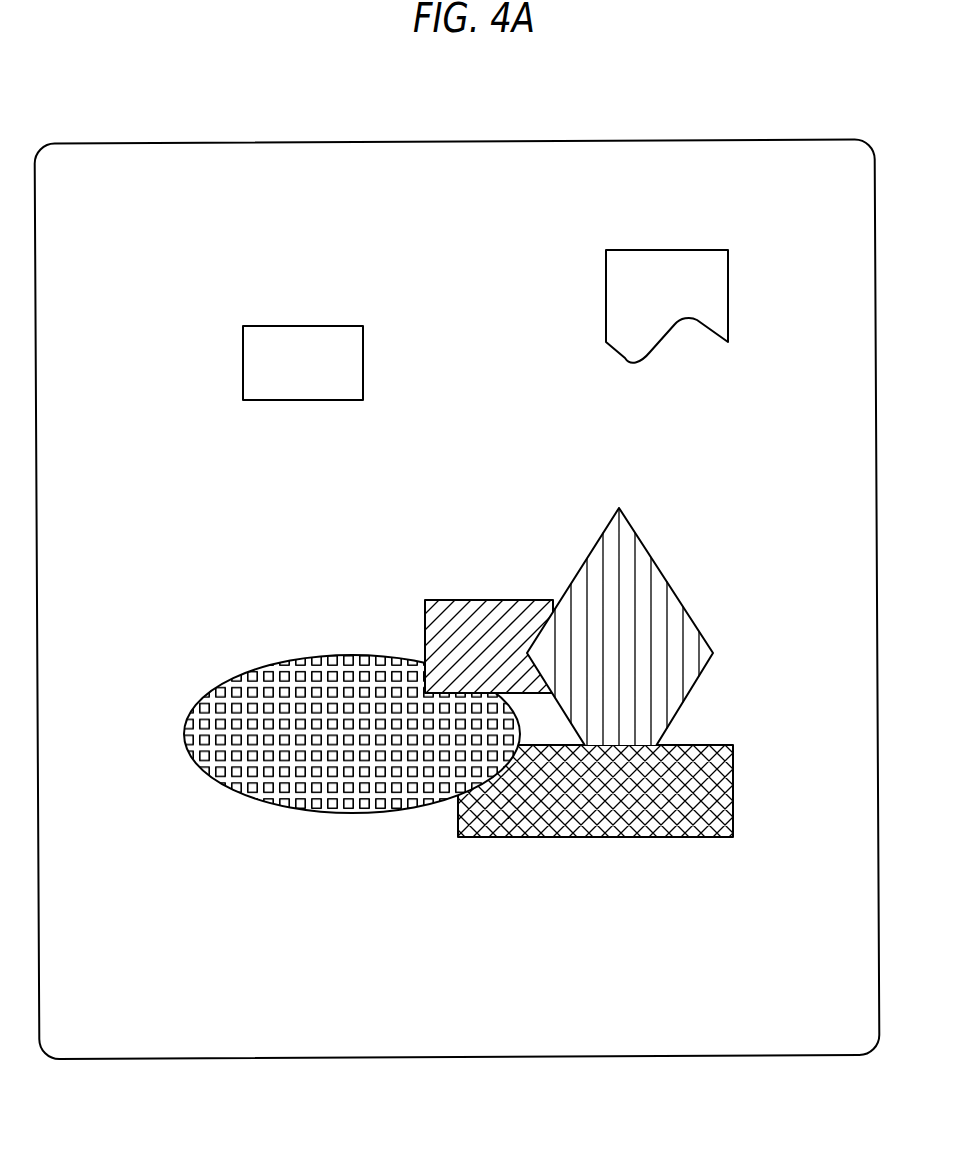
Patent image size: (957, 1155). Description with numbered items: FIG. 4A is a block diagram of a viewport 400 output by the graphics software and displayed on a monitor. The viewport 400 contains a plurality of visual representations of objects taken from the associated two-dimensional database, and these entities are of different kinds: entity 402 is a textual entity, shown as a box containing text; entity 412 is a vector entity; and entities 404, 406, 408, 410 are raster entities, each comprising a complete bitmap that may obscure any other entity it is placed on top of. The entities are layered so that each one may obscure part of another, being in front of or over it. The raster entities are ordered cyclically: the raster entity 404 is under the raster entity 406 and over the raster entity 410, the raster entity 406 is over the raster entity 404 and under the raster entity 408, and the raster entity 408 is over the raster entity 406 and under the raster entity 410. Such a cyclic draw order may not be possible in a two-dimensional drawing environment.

The viewport 400 is at (651, 133).
The textual entity 402 is at (363, 363).
The raster entity 404 is at (212, 687).
The raster entity 406 is at (422, 618).
The raster entity 408 is at (660, 571).
The raster entity 410 is at (733, 790).
The vector entity 412 is at (728, 296).